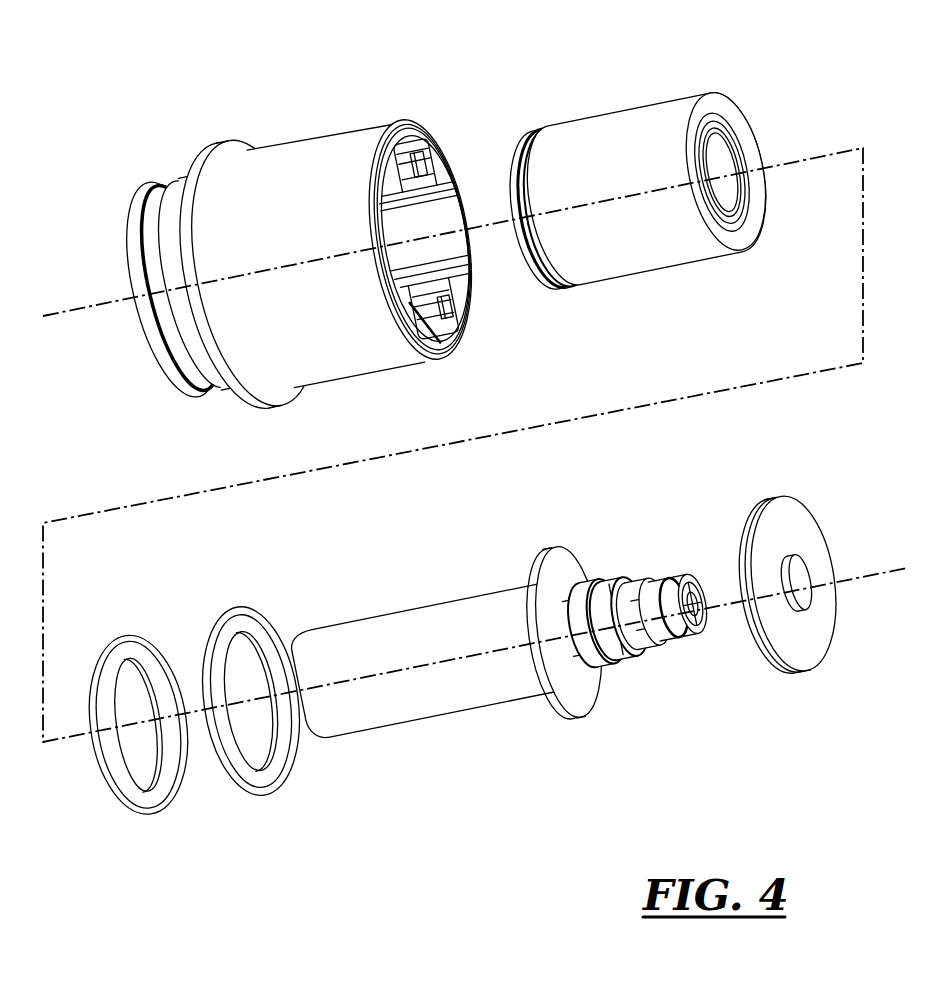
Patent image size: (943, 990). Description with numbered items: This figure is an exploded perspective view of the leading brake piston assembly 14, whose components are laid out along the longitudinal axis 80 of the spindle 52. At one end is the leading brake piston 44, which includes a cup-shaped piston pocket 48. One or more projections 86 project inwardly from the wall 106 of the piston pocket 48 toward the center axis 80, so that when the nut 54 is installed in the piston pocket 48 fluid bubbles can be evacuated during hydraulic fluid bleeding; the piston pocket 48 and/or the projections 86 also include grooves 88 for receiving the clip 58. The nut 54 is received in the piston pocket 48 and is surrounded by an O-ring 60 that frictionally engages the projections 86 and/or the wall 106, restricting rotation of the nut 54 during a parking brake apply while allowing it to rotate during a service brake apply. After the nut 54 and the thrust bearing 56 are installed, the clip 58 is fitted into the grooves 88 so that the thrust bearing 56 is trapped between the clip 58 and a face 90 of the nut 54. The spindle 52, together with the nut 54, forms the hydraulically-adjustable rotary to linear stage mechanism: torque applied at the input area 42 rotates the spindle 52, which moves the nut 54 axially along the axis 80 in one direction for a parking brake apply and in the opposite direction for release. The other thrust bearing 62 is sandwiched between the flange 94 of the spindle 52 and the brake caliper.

The leading brake piston assembly 14 is at (252, 66).
The leading brake piston 44 is at (300, 193).
The piston pocket 48 is at (453, 220).
The projections 86 is at (407, 170).
The grooves 88 is at (422, 166).
The wall 106 is at (427, 217).
The O-ring 60 is at (530, 127).
The nut 54 is at (647, 147).
The face 90 is at (712, 107).
The longitudinal axis 80 is at (803, 160).
The input area 42 is at (697, 587).
The spindle 52 is at (433, 693).
The thrust bearing 56 is at (172, 793).
The clip 58 is at (272, 785).
The flange 94 is at (597, 693).
The thrust bearing 62 is at (813, 652).